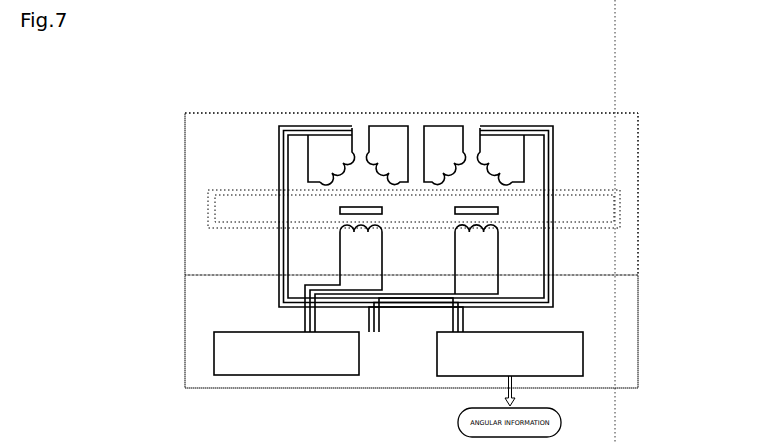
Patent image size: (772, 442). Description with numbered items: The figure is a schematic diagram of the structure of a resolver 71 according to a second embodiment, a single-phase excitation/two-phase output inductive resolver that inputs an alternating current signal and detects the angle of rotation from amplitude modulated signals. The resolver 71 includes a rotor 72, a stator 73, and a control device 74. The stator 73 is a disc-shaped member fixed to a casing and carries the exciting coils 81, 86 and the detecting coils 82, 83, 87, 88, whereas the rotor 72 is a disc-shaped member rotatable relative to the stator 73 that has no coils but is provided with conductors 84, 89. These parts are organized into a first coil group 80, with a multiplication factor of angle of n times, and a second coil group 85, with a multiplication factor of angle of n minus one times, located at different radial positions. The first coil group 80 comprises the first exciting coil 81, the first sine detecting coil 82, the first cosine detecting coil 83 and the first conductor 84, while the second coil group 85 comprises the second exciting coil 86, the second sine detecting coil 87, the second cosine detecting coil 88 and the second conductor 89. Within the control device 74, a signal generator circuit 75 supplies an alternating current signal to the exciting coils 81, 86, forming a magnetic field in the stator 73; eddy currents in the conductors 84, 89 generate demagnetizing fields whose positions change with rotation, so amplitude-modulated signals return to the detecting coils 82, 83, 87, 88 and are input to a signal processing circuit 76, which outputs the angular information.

The resolver 71 is at (651, 111).
The rotor 72 is at (621, 199).
The stator 73 is at (639, 144).
The control device 74 is at (640, 343).
The signal generator circuit 75 is at (360, 351).
The signal processing circuit 76 is at (585, 352).
The first coil group 80 is at (280, 111).
The first exciting coil 81 is at (343, 233).
The first sine detecting coil 82 is at (350, 128).
The first cosine detecting coil 83 is at (370, 128).
The first conductor 84 is at (384, 210).
The second coil group 85 is at (565, 111).
The second exciting coil 86 is at (496, 234).
The second sine detecting coil 87 is at (464, 128).
The second cosine detecting coil 88 is at (484, 128).
The second conductor 89 is at (455, 210).